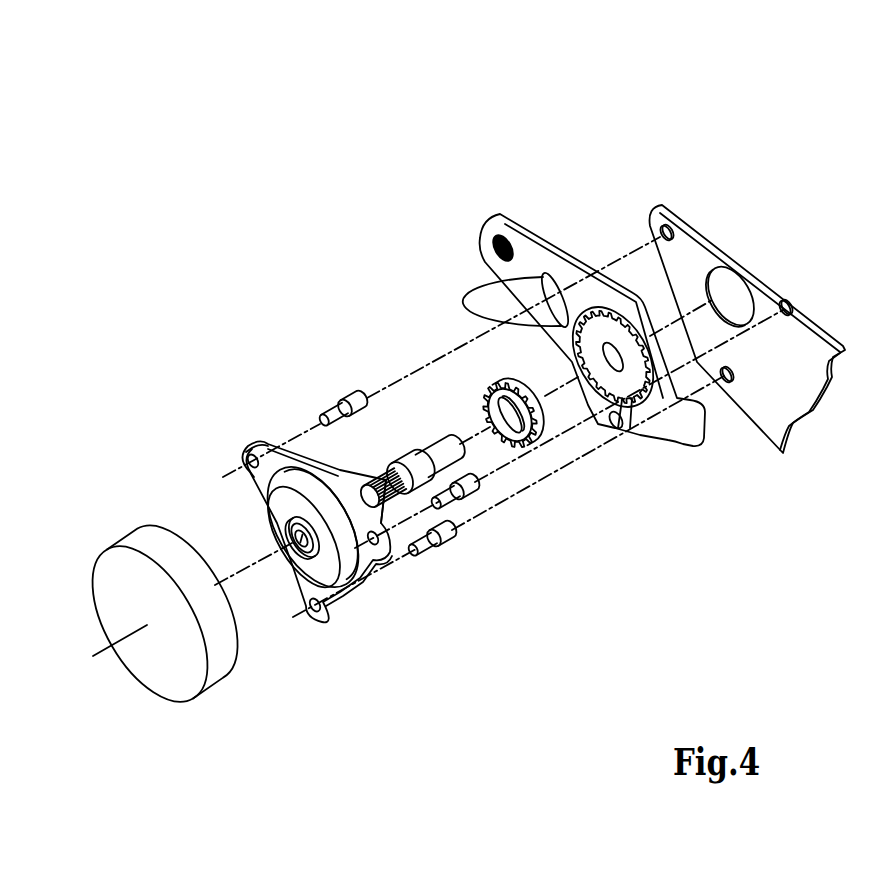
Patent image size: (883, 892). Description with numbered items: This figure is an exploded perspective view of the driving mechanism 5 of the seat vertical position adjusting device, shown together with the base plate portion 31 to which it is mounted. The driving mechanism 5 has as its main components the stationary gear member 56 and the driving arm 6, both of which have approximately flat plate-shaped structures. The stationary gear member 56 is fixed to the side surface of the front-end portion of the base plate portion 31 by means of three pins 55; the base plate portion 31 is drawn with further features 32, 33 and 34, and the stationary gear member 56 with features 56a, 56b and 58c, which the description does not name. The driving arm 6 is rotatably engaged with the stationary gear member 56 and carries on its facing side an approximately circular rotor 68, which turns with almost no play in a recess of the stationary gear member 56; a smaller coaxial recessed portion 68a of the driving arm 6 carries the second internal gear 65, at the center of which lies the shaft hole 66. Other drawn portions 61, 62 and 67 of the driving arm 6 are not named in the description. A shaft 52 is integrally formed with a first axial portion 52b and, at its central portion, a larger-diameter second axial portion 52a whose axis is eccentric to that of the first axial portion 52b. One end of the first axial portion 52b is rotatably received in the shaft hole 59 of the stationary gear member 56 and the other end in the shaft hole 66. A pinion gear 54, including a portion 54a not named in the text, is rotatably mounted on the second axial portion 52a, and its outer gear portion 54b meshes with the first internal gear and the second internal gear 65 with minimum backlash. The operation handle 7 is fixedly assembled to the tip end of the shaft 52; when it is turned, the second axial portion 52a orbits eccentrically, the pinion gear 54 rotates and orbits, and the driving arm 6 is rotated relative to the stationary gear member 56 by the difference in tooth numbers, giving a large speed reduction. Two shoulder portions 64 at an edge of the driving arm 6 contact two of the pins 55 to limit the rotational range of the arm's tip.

The driving mechanism 5 is at (344, 280).
The driving arm 6 is at (498, 203).
The operation handle 7 is at (122, 534).
The base plate portion 31 is at (737, 245).
The center hole 32 is at (734, 290).
The mounting hole 33 is at (669, 231).
The mounting hole 34 is at (796, 304).
The shaft 52 is at (364, 452).
The second axial portion 52a is at (422, 452).
The first axial portion 52b is at (446, 440).
The pinion gear 54 is at (481, 390).
The gear hub 54a is at (478, 395).
The gear portion 54b is at (520, 377).
The pins 55 is at (358, 392).
The stationary gear member 56 is at (367, 596).
The plate ear 56a is at (247, 458).
The plate mounting holes 56b is at (312, 609).
The plate side edge 58c is at (388, 517).
The shaft hole 59 is at (290, 535).
The bracket arm 61 is at (537, 255).
The bracket slot 62 is at (492, 247).
The shoulder portions 64 is at (640, 300).
The second internal gear 65 is at (597, 415).
The shaft hole 66 is at (637, 425).
The bracket ear 67 is at (656, 425).
The rotor 68 is at (600, 308).
The recessed portion 68a is at (640, 405).